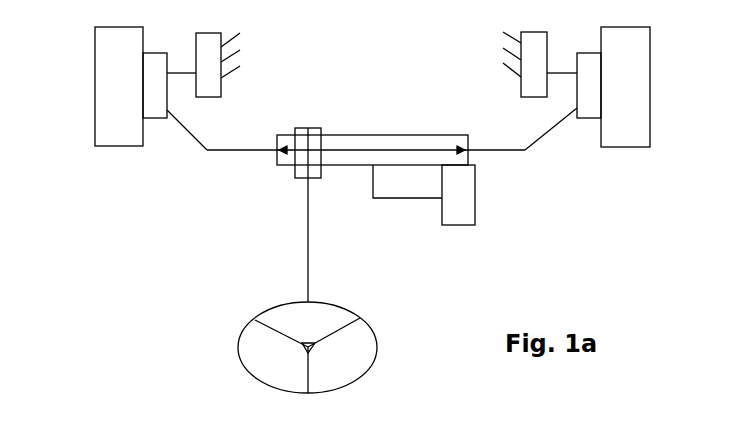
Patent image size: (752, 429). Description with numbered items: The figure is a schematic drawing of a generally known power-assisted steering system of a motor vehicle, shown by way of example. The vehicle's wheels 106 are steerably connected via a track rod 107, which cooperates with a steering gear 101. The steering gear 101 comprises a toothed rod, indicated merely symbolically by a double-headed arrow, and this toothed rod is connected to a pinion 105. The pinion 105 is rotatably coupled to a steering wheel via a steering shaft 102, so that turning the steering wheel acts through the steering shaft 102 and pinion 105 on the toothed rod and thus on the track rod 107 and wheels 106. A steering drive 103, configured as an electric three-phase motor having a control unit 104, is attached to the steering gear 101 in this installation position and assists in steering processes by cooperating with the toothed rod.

The steering gear 101 is at (365, 140).
The steering shaft 102 is at (305, 228).
The steering drive 103 is at (403, 195).
The control unit 104 is at (470, 205).
The pinion 105 is at (318, 127).
The wheels 106 is at (95, 145).
The track rod 107 is at (528, 152).